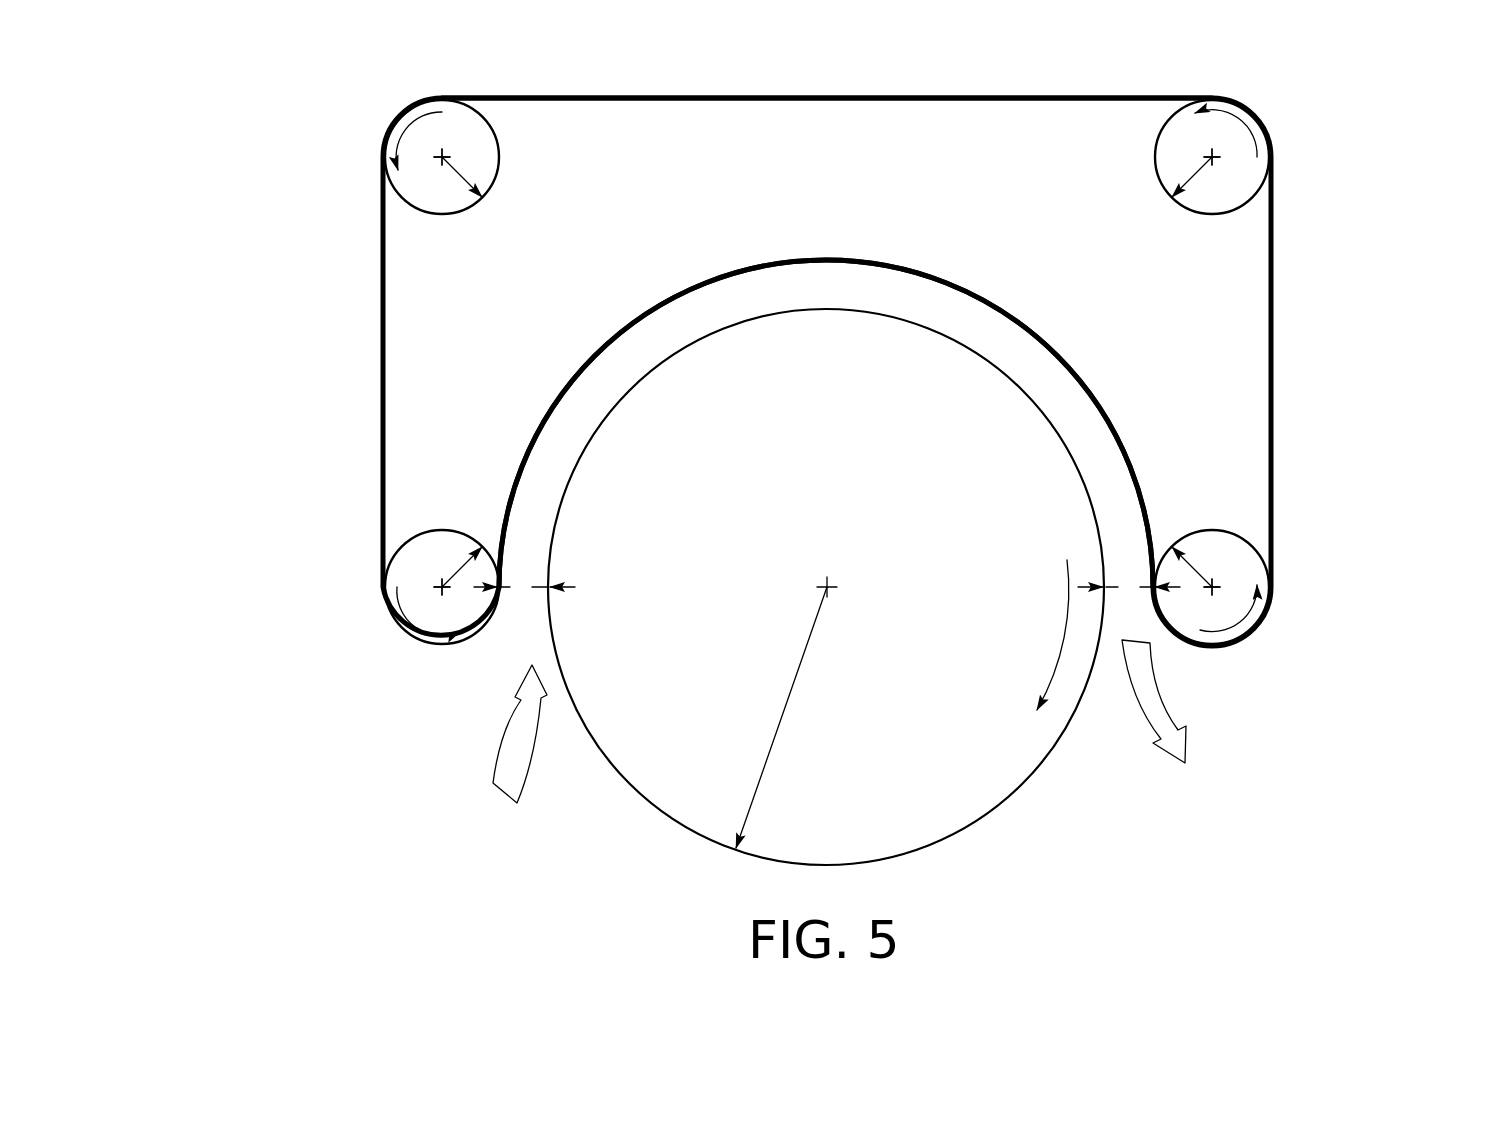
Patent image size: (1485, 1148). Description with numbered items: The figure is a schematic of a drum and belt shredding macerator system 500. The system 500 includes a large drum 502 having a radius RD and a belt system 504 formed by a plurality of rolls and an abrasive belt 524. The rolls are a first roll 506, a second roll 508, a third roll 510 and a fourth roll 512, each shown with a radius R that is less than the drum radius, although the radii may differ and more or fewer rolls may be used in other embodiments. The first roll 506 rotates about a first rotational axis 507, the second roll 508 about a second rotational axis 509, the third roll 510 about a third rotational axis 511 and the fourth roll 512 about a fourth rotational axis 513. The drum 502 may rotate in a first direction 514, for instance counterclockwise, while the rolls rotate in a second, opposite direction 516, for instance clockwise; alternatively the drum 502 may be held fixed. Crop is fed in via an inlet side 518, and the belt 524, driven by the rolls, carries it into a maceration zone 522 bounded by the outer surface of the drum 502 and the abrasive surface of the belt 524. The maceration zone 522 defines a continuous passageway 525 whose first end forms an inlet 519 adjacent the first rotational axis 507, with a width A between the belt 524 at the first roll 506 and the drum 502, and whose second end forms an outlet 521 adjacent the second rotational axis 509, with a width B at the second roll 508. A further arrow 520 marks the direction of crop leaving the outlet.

The drum and belt shredding macerator system 500 is at (235, 142).
The drum 502 is at (1010, 790).
The belt system 504 is at (1300, 262).
The first roll 506 is at (443, 529).
The first rotational axis 507 is at (440, 585).
The second roll 508 is at (1212, 530).
The second rotational axis 509 is at (1215, 587).
The third roll 510 is at (1207, 268).
The third rotational axis 511 is at (1210, 157).
The fourth roll 512 is at (443, 216).
The fourth rotational axis 513 is at (445, 157).
The first direction 514 is at (1062, 635).
The second direction 516 is at (405, 134).
The inlet side 518 is at (538, 757).
The inlet 519 is at (503, 618).
The belt exit direction arrow 520 is at (1152, 675).
The outlet 521 is at (1112, 655).
The maceration zone 522 is at (840, 290).
The abrasive belt 524 is at (972, 97).
The continuous passageway 525 is at (755, 295).